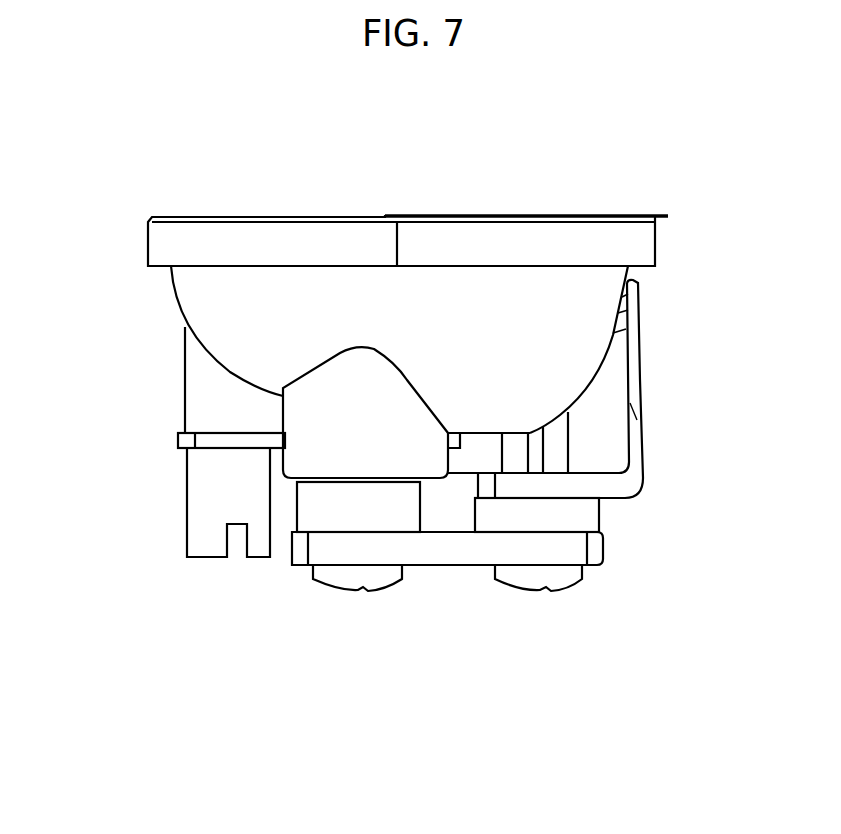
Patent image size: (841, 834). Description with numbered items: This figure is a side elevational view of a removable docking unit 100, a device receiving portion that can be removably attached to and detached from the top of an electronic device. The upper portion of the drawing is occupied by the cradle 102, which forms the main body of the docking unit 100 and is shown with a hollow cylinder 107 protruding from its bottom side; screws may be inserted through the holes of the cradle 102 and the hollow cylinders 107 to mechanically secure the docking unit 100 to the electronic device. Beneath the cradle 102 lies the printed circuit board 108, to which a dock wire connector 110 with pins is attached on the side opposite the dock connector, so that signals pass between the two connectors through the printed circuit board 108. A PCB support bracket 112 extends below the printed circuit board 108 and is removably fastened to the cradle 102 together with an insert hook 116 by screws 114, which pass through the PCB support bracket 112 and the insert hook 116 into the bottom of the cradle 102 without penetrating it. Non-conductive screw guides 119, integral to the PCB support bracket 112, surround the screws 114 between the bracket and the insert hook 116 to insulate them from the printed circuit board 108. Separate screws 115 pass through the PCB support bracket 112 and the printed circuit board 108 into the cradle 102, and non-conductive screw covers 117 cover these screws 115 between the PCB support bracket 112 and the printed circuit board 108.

The removable docking unit 100 is at (186, 170).
The cradle 102 is at (548, 315).
The hollow cylinders 107 is at (337, 403).
The printed circuit board 108 is at (220, 441).
The dock wire connector 110 is at (210, 484).
The PCB support bracket 112 is at (553, 545).
The screws 114 is at (550, 588).
The screws 115 is at (363, 590).
The insert hook 116 is at (595, 487).
The non-conductive screw covers 117 is at (328, 505).
The non-conductive screw guides 119 is at (568, 517).